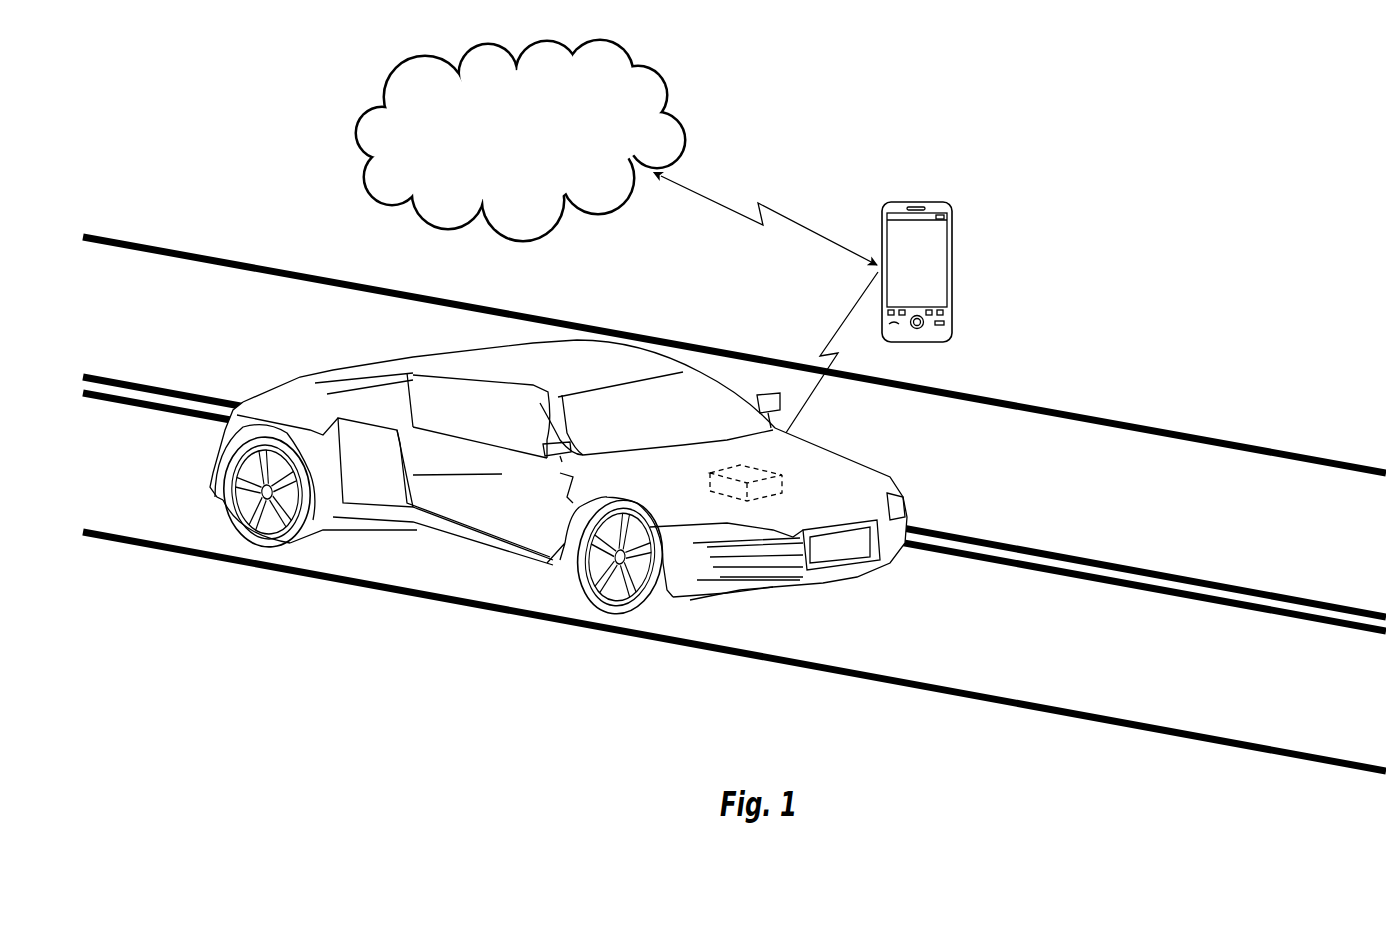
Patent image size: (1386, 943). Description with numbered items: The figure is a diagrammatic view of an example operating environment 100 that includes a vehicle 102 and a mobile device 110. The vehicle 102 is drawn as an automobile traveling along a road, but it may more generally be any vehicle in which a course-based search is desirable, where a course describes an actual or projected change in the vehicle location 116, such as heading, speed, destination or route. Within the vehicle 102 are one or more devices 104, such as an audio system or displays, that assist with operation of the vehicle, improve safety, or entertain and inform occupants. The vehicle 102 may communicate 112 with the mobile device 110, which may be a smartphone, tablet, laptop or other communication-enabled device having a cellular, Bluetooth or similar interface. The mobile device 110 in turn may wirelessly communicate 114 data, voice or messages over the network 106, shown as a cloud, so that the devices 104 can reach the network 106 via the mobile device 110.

The operating environment 100 is at (945, 104).
The vehicle 102 is at (650, 337).
The devices 104 is at (727, 493).
The network 106 is at (531, 165).
The mobile device 110 is at (952, 268).
The communicate 112 is at (837, 323).
The wirelessly communicate 114 is at (723, 203).
The location 116 is at (1033, 643).